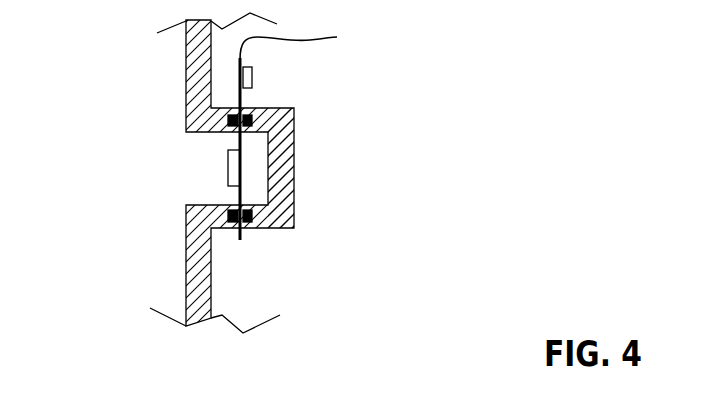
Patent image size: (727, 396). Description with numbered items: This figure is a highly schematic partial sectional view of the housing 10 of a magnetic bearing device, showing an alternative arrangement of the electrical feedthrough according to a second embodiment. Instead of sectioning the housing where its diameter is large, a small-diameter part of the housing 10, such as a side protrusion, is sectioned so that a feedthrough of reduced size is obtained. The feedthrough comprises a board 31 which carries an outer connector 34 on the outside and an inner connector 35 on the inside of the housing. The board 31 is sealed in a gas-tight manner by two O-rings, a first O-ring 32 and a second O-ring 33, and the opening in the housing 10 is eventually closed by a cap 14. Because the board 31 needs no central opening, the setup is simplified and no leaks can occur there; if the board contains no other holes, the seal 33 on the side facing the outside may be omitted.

The housing 10 is at (195, 76).
The cap 14 is at (278, 178).
The board 31 is at (303, 132).
The first O-ring 32 is at (228, 217).
The second O-ring 33 is at (250, 215).
The outer connector 34 is at (252, 77).
The inner connector 35 is at (228, 172).